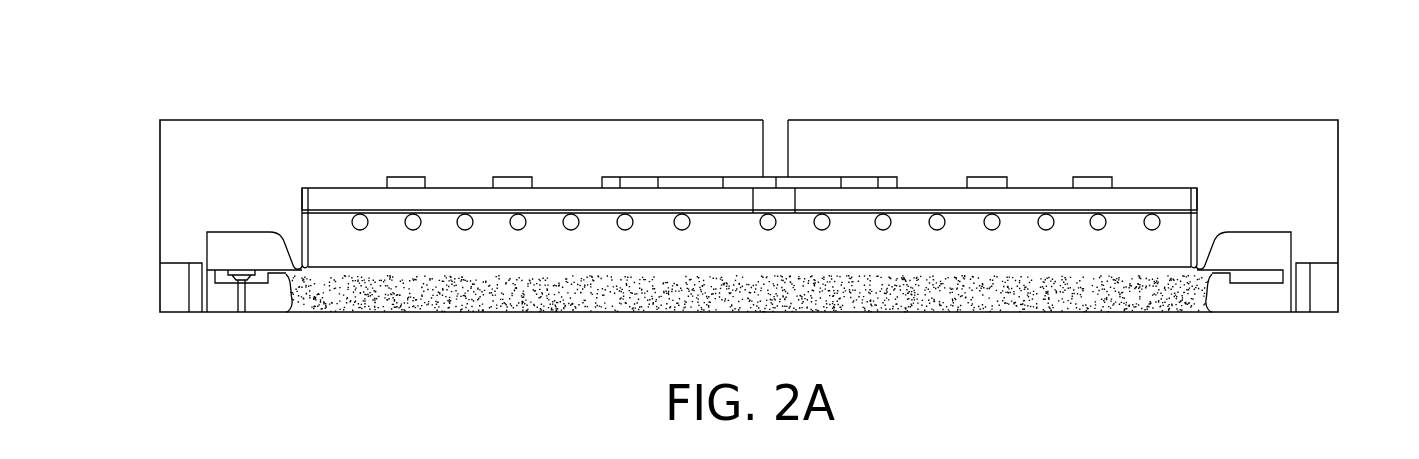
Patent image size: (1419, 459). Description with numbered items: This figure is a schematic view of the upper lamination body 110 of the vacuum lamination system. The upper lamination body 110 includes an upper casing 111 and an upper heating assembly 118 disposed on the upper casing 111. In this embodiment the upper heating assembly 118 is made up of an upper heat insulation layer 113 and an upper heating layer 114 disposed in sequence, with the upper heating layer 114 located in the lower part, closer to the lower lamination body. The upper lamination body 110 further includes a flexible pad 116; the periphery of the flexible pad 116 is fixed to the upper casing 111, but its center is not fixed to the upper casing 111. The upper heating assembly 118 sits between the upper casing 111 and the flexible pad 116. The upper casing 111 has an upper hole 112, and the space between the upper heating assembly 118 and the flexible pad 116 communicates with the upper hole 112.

The upper lamination body 110 is at (1292, 78).
The upper casing 111 is at (1315, 189).
The upper hole 112 is at (780, 150).
The upper heat insulation layer 113 is at (325, 193).
The upper heating layer 114 is at (325, 226).
The flexible pad 116 is at (417, 302).
The upper heating assembly 118 is at (618, 205).